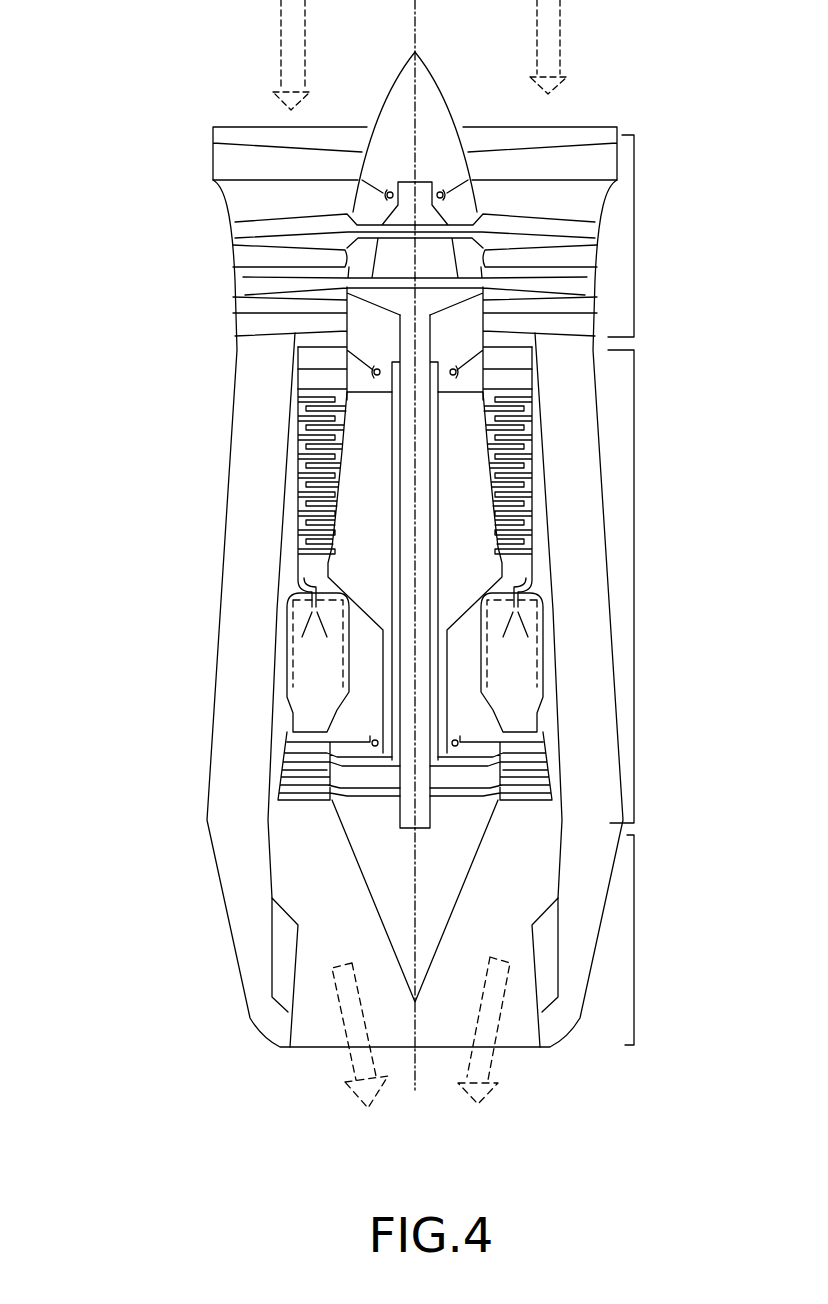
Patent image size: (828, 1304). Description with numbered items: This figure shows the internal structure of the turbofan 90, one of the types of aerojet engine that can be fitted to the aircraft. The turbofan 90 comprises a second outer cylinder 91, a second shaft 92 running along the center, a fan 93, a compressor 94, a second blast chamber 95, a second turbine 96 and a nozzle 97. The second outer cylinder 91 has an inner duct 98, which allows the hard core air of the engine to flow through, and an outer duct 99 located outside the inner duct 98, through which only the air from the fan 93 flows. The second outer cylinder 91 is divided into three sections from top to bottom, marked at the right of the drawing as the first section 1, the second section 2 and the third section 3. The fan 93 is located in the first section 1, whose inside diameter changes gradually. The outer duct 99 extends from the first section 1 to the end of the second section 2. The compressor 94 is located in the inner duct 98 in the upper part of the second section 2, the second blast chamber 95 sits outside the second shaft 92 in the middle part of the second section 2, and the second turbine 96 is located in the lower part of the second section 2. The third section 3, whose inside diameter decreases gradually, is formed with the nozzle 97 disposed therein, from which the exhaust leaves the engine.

The turbofan 90 is at (183, 118).
The second outer cylinder 91 is at (237, 363).
The second shaft 92 is at (405, 640).
The fan 93 is at (282, 233).
The compressor 94 is at (303, 470).
The second blast chamber 95 is at (310, 682).
The second turbine 96 is at (302, 790).
The nozzle 97 is at (305, 1003).
The inner duct 98 is at (320, 357).
The outer duct 99 is at (253, 550).
The first section 1 is at (630, 236).
The second section 2 is at (633, 586).
The third section 3 is at (642, 940).